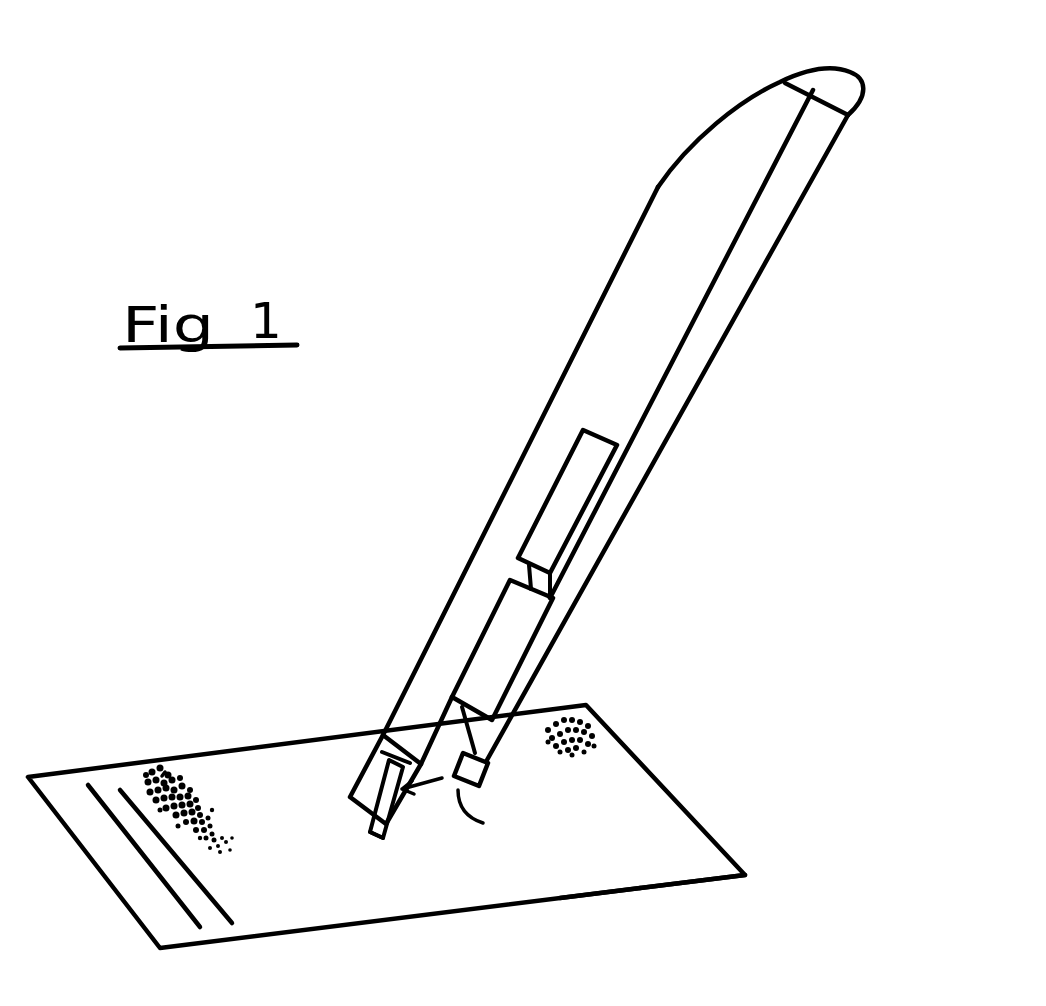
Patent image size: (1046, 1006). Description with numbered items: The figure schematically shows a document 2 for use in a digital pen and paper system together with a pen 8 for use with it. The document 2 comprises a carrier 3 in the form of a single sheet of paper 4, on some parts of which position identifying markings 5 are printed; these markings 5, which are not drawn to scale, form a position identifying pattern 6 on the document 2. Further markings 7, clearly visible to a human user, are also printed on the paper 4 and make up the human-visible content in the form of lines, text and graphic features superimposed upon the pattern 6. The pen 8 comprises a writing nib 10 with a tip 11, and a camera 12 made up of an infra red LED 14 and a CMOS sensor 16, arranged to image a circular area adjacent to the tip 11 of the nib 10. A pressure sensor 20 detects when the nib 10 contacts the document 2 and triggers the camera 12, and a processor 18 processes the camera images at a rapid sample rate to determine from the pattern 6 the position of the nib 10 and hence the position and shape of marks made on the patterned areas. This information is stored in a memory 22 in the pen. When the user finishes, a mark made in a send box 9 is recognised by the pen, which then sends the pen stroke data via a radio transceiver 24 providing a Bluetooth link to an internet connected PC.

The document 2 is at (683, 853).
The carrier 3 is at (623, 882).
The sheet of paper 4 is at (677, 878).
The position identifying markings 5 is at (167, 770).
The position identifying pattern 6 is at (183, 770).
The further markings 7 is at (147, 757).
The pen 8 is at (588, 330).
The send box 9 is at (598, 722).
The writing nib 10 is at (372, 816).
The tip 11 is at (365, 840).
The camera 12 is at (500, 787).
The infra red LED 14 is at (505, 829).
The CMOS sensor 16 is at (413, 790).
The processor 18 is at (510, 652).
The pressure sensor 20 is at (383, 733).
The memory 22 is at (555, 487).
The radio transceiver 24 is at (833, 85).